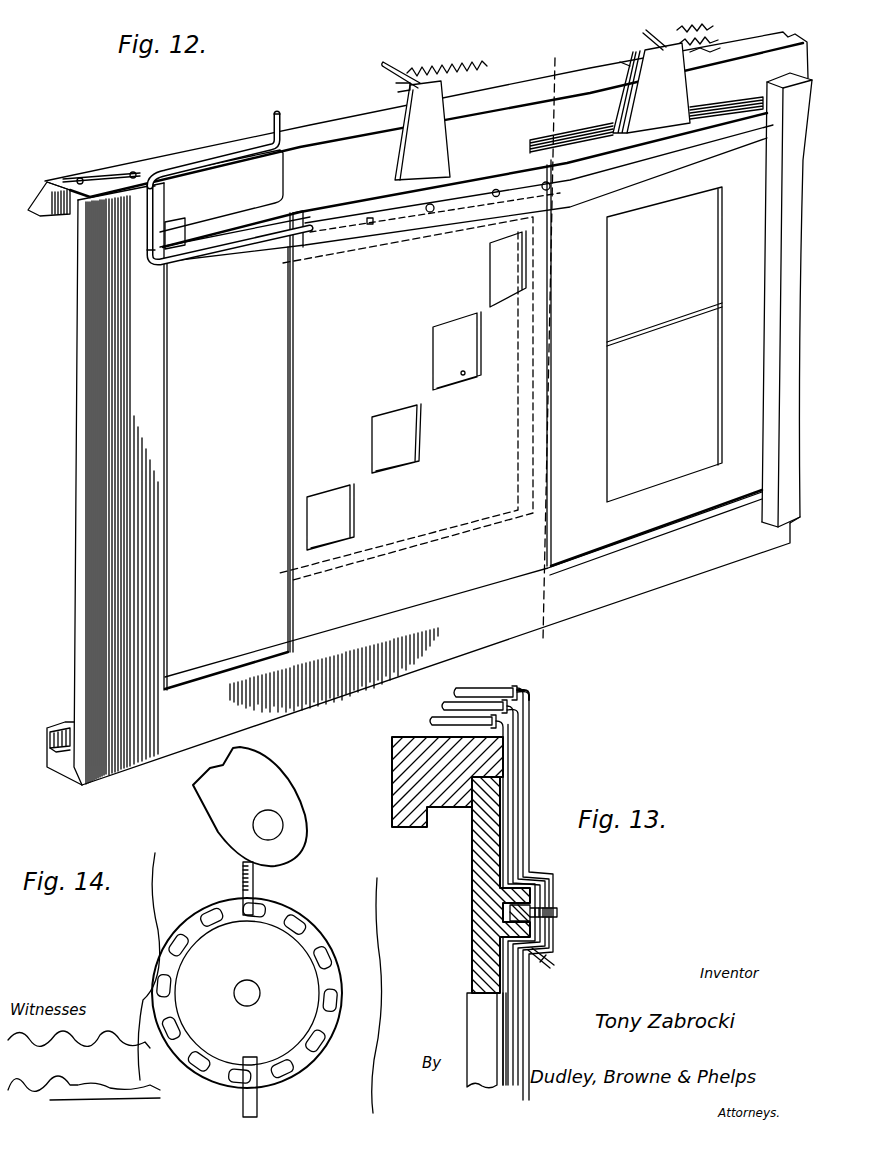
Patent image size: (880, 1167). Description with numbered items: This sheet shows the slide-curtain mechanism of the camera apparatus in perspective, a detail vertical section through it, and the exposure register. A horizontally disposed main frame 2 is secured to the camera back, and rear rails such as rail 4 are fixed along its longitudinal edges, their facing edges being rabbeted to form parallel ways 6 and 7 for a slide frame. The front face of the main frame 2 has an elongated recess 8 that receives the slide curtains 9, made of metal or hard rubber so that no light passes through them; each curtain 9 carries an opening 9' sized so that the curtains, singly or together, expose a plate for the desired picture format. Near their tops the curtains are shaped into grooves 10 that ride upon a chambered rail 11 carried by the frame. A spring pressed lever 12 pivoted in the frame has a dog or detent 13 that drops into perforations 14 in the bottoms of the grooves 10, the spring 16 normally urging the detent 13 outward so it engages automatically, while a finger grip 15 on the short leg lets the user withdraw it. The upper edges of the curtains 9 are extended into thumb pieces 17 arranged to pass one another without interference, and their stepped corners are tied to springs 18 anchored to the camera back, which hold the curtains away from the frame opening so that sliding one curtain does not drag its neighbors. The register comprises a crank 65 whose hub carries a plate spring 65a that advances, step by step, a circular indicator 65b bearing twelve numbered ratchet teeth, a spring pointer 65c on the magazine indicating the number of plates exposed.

In FIG. 12, the main frame 2 is at (428, 408).
In FIG. 13, the rear rail 4 is at (498, 766).
In FIG. 13, the way 6 is at (469, 810).
In FIG. 12, the way 7 is at (63, 745).
In FIG. 12, the elongated recess 8 is at (180, 396).
In FIG. 12, the slide curtain 9 is at (521, 386).
In FIG. 13, the slide curtain 9 is at (525, 1039).
In FIG. 12, the opening 9' is at (416, 390).
In FIG. 12, the groove 10 is at (285, 254).
In FIG. 13, the groove 10 is at (529, 903).
In FIG. 12, the chambered rail 11 is at (213, 247).
In FIG. 13, the chambered rail 11 is at (525, 887).
In FIG. 12, the spring pressed lever 12 is at (158, 268).
In FIG. 13, the spring pressed lever 12 is at (552, 900).
In FIG. 12, the dog or detent 13 is at (430, 200).
In FIG. 13, the dog or detent 13 is at (558, 913).
In FIG. 12, the perforation 14 is at (492, 196).
In FIG. 12, the finger grip 15 is at (191, 145).
In FIG. 12, the spring 16 is at (158, 172).
In FIG. 12, the thumb piece 17 is at (395, 70).
In FIG. 13, the thumb piece 17 is at (453, 692).
In FIG. 12, the spring 18 is at (585, 83).
In FIG. 13, the spring 18 is at (516, 692).
In FIG. 14, the crank 65 is at (250, 806).
In FIG. 14, the plate spring 65a is at (253, 883).
In FIG. 14, the circular indicator 65b is at (128, 965).
In FIG. 14, the spring pointer 65c is at (258, 1098).